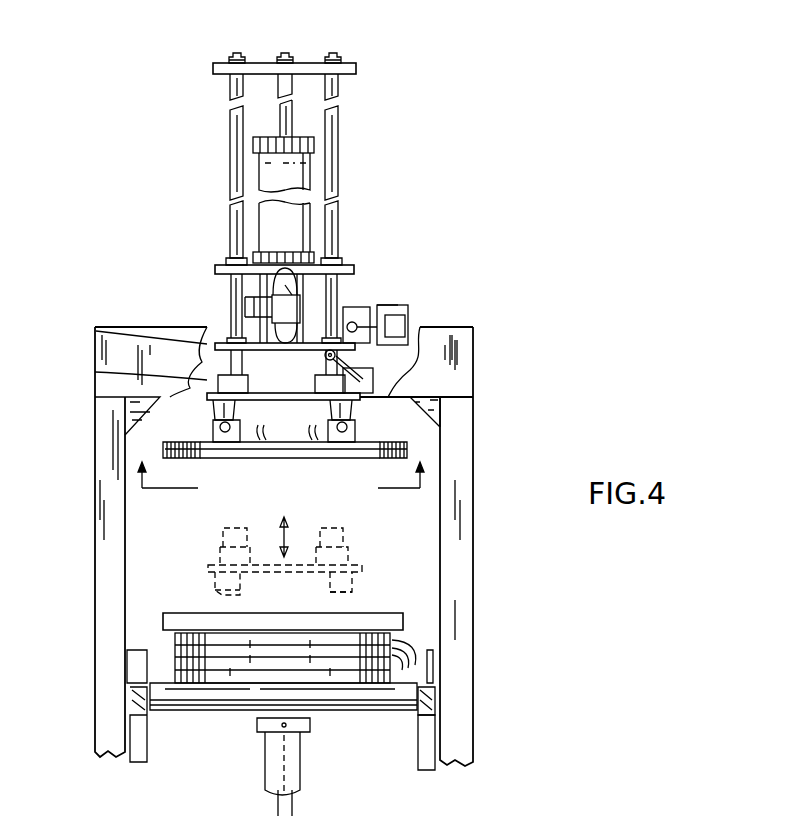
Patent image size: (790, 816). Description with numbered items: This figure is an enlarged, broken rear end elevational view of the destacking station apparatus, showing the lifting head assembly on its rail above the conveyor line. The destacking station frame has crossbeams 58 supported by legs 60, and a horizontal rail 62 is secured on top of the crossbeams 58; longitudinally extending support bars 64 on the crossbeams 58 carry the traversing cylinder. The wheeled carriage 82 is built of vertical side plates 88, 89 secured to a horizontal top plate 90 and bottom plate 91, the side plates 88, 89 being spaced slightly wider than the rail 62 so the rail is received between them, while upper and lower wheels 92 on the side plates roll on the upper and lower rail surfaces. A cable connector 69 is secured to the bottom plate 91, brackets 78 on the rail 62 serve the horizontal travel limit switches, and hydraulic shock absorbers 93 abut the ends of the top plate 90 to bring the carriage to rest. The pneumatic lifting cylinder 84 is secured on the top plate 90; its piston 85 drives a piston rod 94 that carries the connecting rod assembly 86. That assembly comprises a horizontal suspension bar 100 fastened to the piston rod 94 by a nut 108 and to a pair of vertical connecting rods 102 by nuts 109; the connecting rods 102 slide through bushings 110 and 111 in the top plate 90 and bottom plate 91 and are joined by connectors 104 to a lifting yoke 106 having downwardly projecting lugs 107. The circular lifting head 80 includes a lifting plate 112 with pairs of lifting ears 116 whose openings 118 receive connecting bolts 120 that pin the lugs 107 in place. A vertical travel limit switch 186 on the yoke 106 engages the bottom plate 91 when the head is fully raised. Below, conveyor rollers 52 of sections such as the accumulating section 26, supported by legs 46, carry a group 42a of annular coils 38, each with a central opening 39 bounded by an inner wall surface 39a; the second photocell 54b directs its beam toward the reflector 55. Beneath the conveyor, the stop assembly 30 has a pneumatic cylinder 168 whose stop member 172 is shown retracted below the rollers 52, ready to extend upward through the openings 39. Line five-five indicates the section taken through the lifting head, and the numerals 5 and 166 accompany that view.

The section line 5- 5 is at (278, 491).
The accumulating section 26 is at (420, 697).
The stop assembly 30 is at (262, 778).
The annular coils 38 is at (390, 660).
The central opening 39 is at (262, 630).
The inner wall surface 39a is at (315, 632).
The group of coils 42a is at (350, 636).
The legs 46 is at (145, 735).
The rollers 52 is at (435, 665).
The second photocell 54b is at (140, 650).
The reflector 55 is at (465, 685).
The crossbeams 58 is at (420, 333).
The legs 60 is at (110, 747).
The rail 62 is at (270, 315).
The support bars 64 is at (405, 318).
The connector 69 is at (395, 305).
The brackets 78 is at (243, 300).
The lifting head 80 is at (412, 438).
The carriage 82 is at (368, 265).
The lifting cylinder 84 is at (312, 208).
The piston 85 is at (318, 166).
The connecting rod assembly 86 is at (352, 53).
The side plate 88 is at (253, 305).
The side plate 89 is at (336, 290).
The top plate 90 is at (240, 270).
The bottom plate 91 is at (95, 327).
The wheels 92 is at (286, 287).
The shock absorbers 93 is at (345, 310).
The piston rod 94 is at (280, 90).
The suspension bar 100 is at (213, 68).
The connecting rods 102 is at (230, 125).
The connectors 104 is at (322, 388).
The lifting yoke 106 is at (115, 373).
The lugs 107 is at (213, 410).
The nut 108 is at (292, 58).
The nuts 109 is at (236, 54).
The bushings 110 is at (233, 258).
The bushings 111 is at (215, 343).
The lifting plate 112 is at (410, 448).
The lifting ears 116 is at (165, 445).
The openings 118 is at (222, 432).
The connecting bolts 120 is at (340, 433).
The base member 166 is at (143, 811).
The pneumatic cylinder 168 is at (300, 772).
The stop member 172 is at (312, 720).
The vertical travel limit switch 186 is at (378, 385).